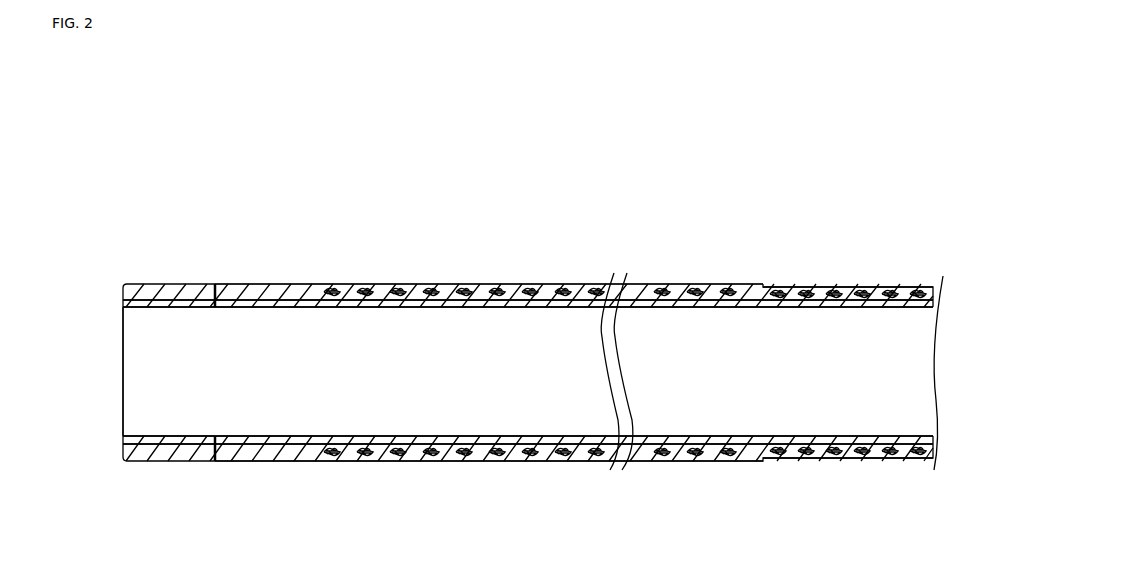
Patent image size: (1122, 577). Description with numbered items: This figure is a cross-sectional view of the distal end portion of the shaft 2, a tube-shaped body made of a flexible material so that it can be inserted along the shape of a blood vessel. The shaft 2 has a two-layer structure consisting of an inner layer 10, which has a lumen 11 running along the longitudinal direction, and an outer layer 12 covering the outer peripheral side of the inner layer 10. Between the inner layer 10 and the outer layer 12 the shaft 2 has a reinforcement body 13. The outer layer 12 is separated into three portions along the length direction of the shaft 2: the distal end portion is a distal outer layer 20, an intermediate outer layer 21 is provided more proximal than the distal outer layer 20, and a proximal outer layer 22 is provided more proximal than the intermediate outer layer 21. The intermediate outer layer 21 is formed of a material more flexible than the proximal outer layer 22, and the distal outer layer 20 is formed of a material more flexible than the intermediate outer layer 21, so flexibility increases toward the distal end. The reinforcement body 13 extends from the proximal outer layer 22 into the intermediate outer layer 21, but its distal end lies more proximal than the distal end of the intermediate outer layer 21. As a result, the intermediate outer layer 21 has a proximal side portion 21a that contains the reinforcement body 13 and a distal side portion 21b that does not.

The shaft 2 is at (165, 283).
The distal outer layer 20 is at (201, 283).
The inner layer 10 is at (352, 307).
The lumen 11 is at (143, 373).
The outer layer 12 is at (515, 283).
The reinforcement body 13 is at (440, 283).
The intermediate outer layer 21 is at (565, 283).
The proximal side portion 21a is at (320, 474).
The distal side portion 21b is at (213, 474).
The proximal outer layer 22 is at (843, 287).